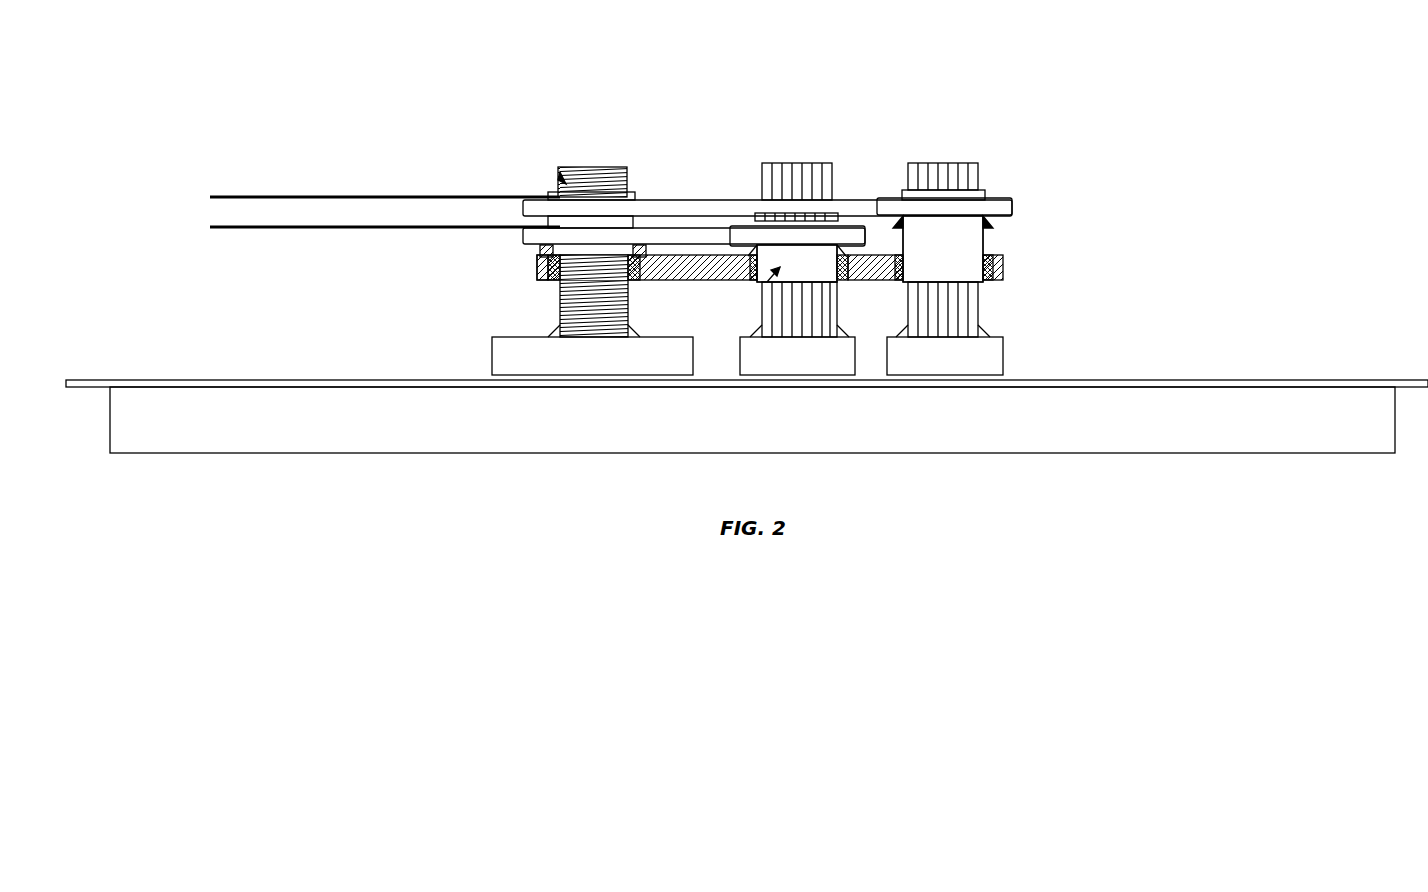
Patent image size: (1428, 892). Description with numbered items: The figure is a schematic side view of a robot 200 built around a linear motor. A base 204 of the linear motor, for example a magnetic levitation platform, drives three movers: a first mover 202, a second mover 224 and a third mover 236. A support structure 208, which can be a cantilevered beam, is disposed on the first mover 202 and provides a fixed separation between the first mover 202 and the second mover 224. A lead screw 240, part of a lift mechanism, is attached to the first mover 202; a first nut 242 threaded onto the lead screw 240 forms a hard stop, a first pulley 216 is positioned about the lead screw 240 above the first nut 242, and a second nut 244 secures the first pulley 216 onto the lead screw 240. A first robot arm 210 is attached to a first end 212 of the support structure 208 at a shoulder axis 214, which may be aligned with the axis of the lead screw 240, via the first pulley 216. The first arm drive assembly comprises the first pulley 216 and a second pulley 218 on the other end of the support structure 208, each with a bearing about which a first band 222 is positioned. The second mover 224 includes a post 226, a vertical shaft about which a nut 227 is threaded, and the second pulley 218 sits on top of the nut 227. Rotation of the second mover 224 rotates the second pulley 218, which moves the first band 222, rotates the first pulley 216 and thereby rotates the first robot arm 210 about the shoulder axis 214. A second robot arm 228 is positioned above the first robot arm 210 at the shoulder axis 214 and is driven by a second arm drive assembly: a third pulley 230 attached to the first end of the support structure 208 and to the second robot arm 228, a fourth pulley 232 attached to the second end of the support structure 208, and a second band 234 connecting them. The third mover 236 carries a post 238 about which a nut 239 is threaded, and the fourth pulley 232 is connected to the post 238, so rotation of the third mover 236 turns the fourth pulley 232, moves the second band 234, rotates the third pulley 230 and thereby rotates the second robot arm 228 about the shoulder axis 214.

The robot 200 is at (1264, 76).
The first mover 202 is at (605, 377).
The base 204 is at (1285, 455).
The support structure 208 is at (645, 283).
The first robot arm 210 is at (212, 230).
The first end 212 is at (540, 275).
The shoulder axis 214 is at (593, 167).
The first pulley 216 is at (525, 243).
The second pulley 218 is at (863, 240).
The first band 222 is at (703, 228).
The second mover 224 is at (805, 377).
The post 226 is at (762, 312).
The nut 227 is at (762, 285).
The second robot arm 228 is at (212, 194).
The third pulley 230 is at (648, 200).
The fourth pulley 232 is at (1012, 205).
The second band 234 is at (848, 200).
The third mover 236 is at (950, 377).
The post 238 is at (978, 300).
The nut 239 is at (985, 232).
The lead screw 240 is at (556, 298).
The first nut 242 is at (540, 258).
The second nut 244 is at (562, 180).